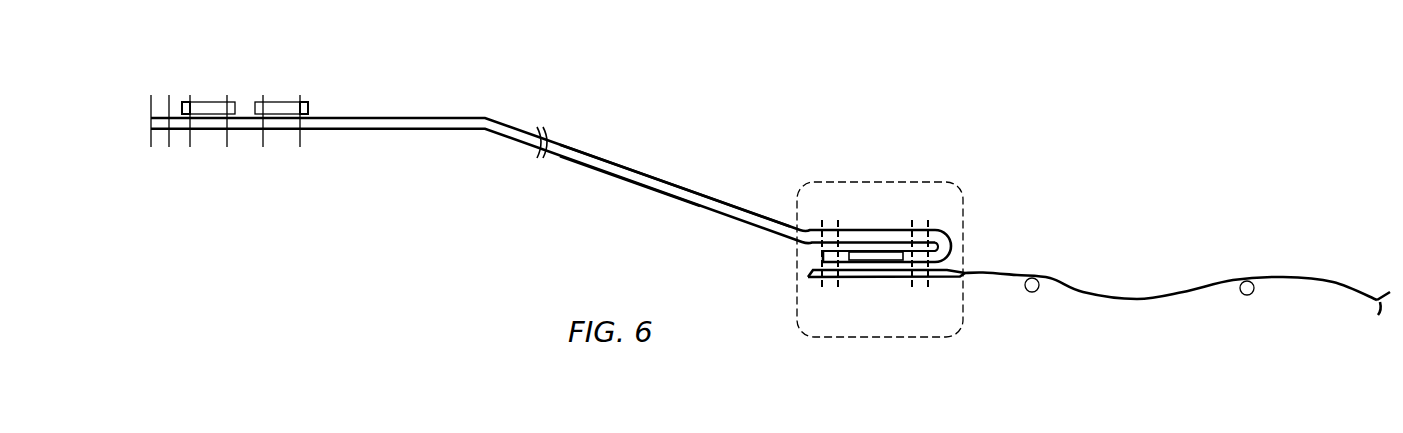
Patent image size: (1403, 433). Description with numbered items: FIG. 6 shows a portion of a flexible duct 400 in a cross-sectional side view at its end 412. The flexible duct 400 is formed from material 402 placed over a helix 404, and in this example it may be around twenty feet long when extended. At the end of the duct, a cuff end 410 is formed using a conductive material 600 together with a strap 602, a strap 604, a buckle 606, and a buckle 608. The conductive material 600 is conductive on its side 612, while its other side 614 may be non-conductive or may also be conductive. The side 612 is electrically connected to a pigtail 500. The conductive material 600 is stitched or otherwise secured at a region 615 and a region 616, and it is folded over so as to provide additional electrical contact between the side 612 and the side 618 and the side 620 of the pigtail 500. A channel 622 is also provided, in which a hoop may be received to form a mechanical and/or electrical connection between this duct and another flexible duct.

The conductive material 600 is at (428, 117).
The strap 602 is at (210, 101).
The strap 604 is at (282, 101).
The buckle 606 is at (185, 101).
The buckle 608 is at (305, 101).
The end 412 is at (543, 92).
The side 614 is at (585, 151).
The side 612 is at (587, 171).
The cuff end 410 is at (698, 163).
The flexible duct 400 is at (798, 78).
The region 615 is at (832, 212).
The region 616 is at (918, 212).
The side 618 is at (875, 263).
The pigtail 500 is at (887, 258).
The side 620 is at (882, 252).
The material 402 is at (1280, 277).
The helix 404 is at (1252, 295).
The channel 622 is at (378, 298).